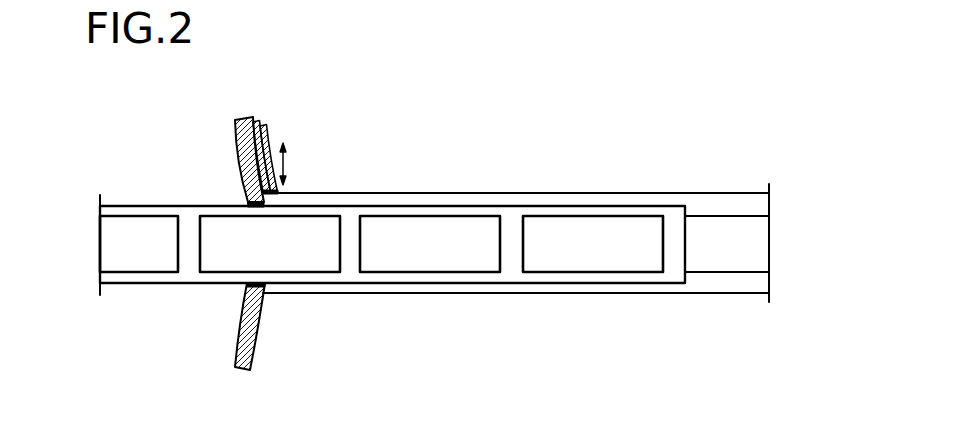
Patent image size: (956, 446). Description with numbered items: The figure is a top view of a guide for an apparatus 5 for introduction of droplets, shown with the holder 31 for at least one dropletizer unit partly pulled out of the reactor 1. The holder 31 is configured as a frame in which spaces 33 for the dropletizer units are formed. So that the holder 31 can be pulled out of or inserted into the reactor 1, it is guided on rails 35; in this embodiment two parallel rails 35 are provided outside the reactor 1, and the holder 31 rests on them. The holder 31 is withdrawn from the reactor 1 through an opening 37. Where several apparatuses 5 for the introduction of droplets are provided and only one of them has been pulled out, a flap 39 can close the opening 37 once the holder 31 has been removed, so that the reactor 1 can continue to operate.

The reactor 1 is at (243, 156).
The apparatus for introduction of droplets 5 is at (467, 266).
The holder for at least one dropletizer unit 31 is at (352, 220).
The spaces for the dropletizer units 33 is at (413, 260).
The rails 35 is at (732, 281).
The opening 37 is at (247, 287).
The flap 39 is at (272, 143).